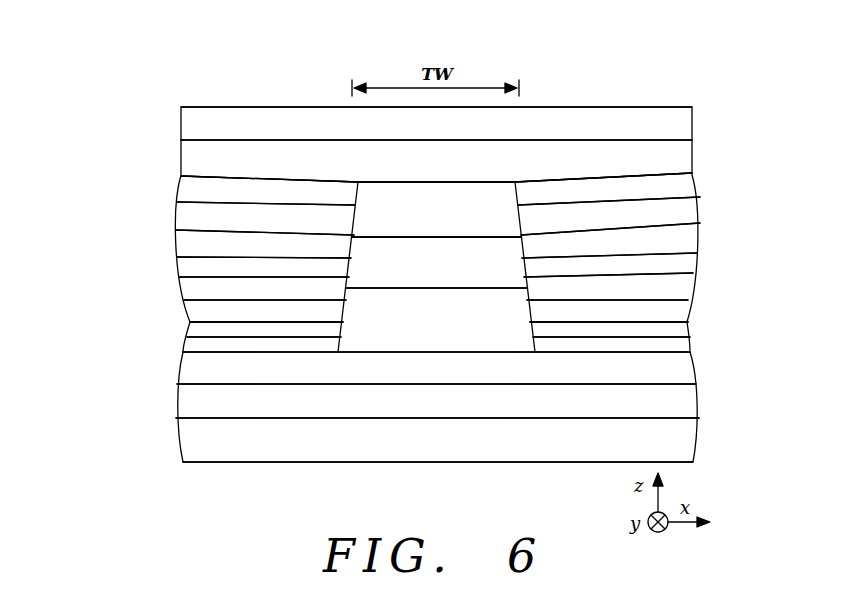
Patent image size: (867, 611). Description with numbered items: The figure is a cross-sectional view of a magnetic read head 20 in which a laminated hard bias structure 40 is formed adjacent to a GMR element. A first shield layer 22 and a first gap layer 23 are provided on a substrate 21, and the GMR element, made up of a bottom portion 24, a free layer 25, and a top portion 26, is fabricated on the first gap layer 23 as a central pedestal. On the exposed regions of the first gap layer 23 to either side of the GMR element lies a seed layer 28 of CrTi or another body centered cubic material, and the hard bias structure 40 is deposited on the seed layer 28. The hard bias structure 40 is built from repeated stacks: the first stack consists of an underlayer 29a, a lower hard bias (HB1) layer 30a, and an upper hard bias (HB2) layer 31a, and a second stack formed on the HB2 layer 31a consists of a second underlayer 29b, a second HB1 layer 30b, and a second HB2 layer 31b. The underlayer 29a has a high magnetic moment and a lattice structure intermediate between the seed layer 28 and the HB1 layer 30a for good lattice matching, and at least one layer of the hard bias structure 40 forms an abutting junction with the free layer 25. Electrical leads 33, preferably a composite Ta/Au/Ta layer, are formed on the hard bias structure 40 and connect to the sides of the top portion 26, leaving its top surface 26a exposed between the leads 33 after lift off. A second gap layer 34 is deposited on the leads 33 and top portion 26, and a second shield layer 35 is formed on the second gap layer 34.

The magnetic read head 20 is at (148, 88).
The substrate 21 is at (682, 441).
The first shield layer 22 is at (682, 402).
The first gap layer 23 is at (682, 370).
The bottom portion 24 is at (383, 335).
The free layer 25 is at (432, 267).
The top portion 26 is at (474, 217).
The top surface 26a is at (502, 182).
The seed layer 28 is at (192, 344).
The underlayer 29a is at (190, 330).
The second underlayer 29b is at (182, 258).
The lower hard bias (HB1) layer 30a is at (188, 306).
The second HB1 layer 30b is at (180, 233).
The upper hard bias (HB2) layer 31a is at (184, 283).
The second HB2 layer 31b is at (183, 204).
The electrical leads 33 is at (183, 180).
The second gap layer 34 is at (684, 150).
The second shield layer 35 is at (684, 115).
The hard bias structure 40 is at (98, 202).